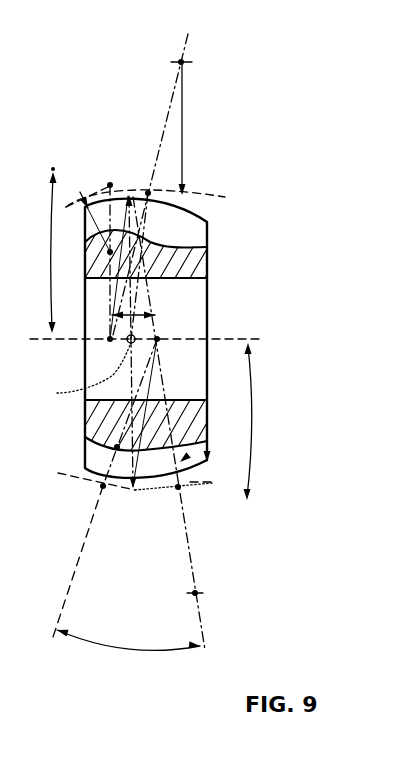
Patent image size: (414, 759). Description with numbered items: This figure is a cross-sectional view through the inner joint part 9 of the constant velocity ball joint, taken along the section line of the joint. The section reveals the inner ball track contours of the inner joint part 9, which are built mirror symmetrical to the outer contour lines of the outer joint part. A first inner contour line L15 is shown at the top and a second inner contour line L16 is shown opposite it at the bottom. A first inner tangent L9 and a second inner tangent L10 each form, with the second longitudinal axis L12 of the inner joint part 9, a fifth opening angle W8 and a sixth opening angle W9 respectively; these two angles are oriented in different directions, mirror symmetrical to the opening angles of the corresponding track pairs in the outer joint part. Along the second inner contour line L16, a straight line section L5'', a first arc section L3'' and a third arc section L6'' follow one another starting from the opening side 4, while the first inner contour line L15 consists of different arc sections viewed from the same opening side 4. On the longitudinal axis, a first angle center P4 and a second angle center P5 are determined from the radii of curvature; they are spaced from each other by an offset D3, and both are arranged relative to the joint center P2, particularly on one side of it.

The inner joint part 9 is at (207, 247).
The opening side 4 is at (85, 428).
The fifth opening angle W8 is at (50, 230).
The first inner tangent L9 is at (78, 178).
The first inner contour line L15 is at (205, 194).
The offset D3 is at (135, 310).
The second angle center P5 is at (157, 339).
The second longitudinal axis L12 is at (224, 339).
The first angle center P4 is at (110, 341).
The joint center P2 is at (78, 378).
The sixth opening angle W9 is at (253, 408).
The third arc section L6'' is at (244, 449).
The straight line section L5'' is at (113, 501).
The second inner tangent L10 is at (177, 492).
The second inner contour line L16 is at (215, 486).
The first arc section L3'' is at (128, 616).